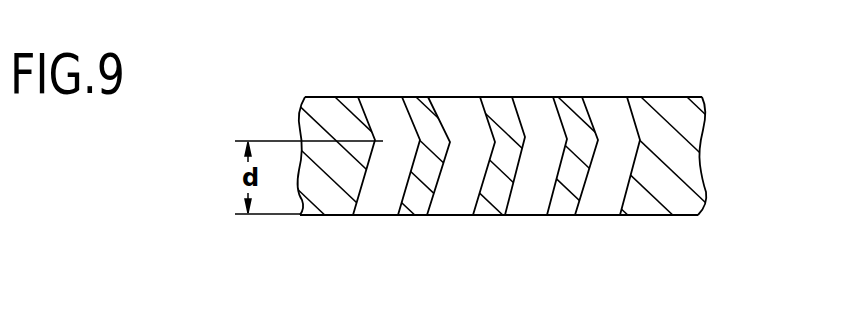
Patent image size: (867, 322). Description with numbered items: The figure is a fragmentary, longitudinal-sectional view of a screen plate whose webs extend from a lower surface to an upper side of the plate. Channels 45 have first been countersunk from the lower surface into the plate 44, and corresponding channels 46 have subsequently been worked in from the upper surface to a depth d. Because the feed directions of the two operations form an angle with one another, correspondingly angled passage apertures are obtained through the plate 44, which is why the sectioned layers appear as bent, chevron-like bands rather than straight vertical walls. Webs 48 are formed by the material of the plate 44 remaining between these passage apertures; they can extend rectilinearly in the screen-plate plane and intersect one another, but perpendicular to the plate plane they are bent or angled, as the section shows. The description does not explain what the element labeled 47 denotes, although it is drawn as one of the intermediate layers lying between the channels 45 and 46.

The plate 44 is at (657, 216).
The channels 45 is at (375, 216).
The channels 46 is at (382, 97).
The hatched intermediate layer 47 is at (418, 216).
The webs 48 is at (562, 216).